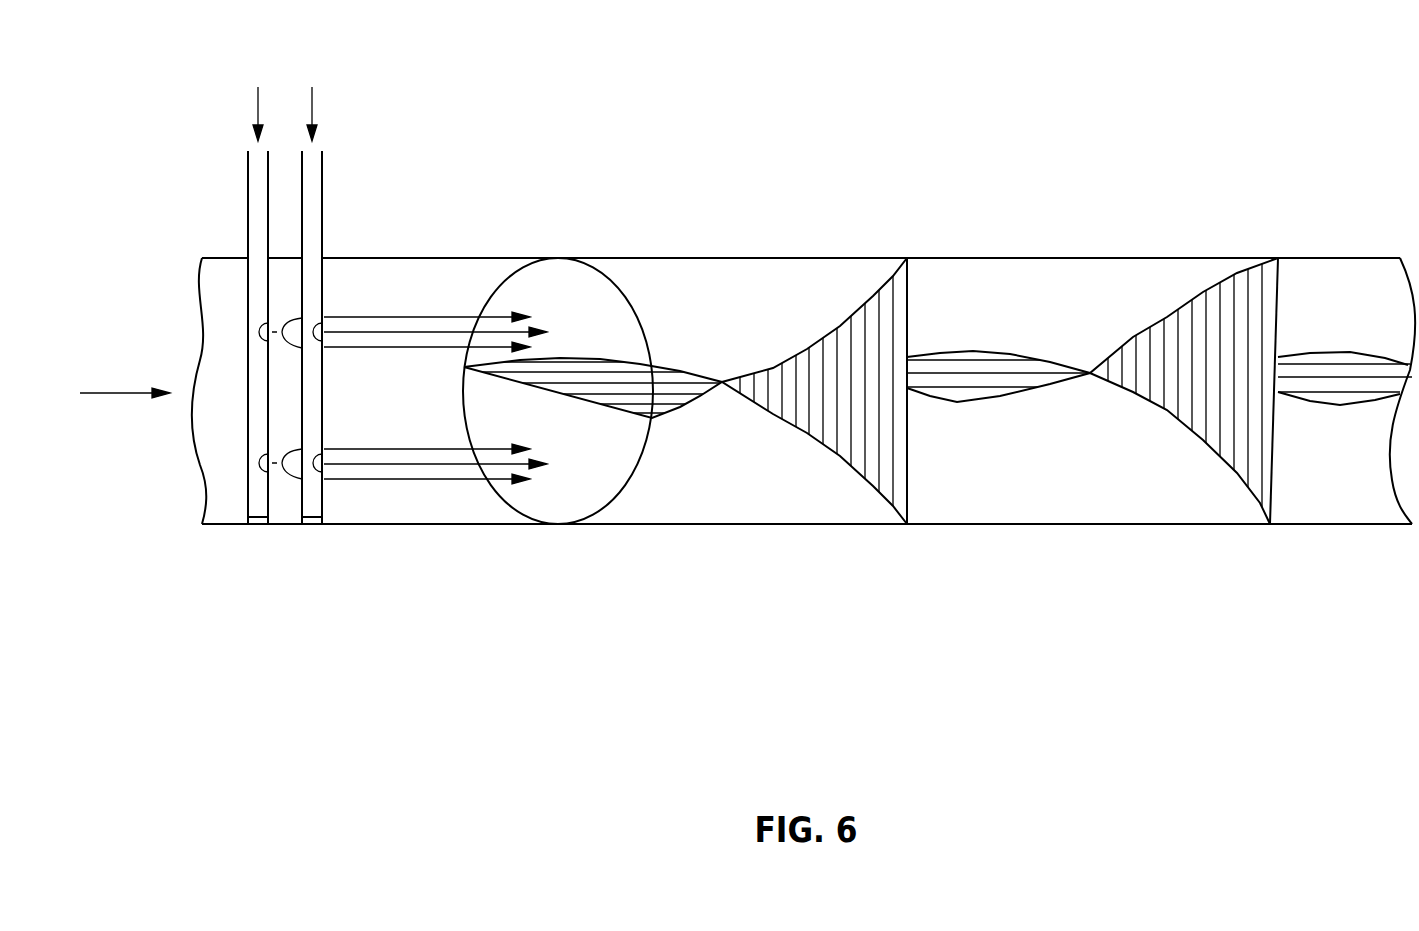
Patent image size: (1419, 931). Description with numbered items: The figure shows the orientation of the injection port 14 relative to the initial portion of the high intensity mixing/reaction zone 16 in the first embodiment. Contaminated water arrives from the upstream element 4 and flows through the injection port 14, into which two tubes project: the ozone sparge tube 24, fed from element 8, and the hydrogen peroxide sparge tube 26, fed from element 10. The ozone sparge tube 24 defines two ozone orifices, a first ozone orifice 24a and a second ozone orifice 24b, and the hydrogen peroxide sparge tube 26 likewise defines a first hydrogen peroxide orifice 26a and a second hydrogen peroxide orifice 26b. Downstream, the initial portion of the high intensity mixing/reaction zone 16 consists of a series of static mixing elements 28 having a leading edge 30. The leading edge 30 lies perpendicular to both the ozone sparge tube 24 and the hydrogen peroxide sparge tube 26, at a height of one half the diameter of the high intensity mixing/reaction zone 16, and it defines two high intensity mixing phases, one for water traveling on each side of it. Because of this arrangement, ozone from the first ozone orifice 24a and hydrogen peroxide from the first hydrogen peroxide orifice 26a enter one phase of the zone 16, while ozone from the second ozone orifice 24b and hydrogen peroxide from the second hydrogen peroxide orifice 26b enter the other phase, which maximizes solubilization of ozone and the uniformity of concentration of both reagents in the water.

The upstream source (flow from element 4) 4 is at (124, 366).
The supply line 8 is at (329, 93).
The supply line 10 is at (237, 93).
The injection port 14 is at (193, 545).
The high intensity mixing/reaction zone 16 is at (473, 545).
The ozone sparge tube 24 is at (322, 218).
The first ozone orifice 24a is at (322, 323).
The second ozone orifice 24b is at (320, 455).
The hydrogen peroxide sparge tube 26 is at (247, 218).
The first hydrogen peroxide orifice 26a is at (258, 328).
The second hydrogen peroxide orifice 26b is at (258, 466).
The static mixing elements 28 is at (912, 238).
The leading edge 30 is at (560, 385).